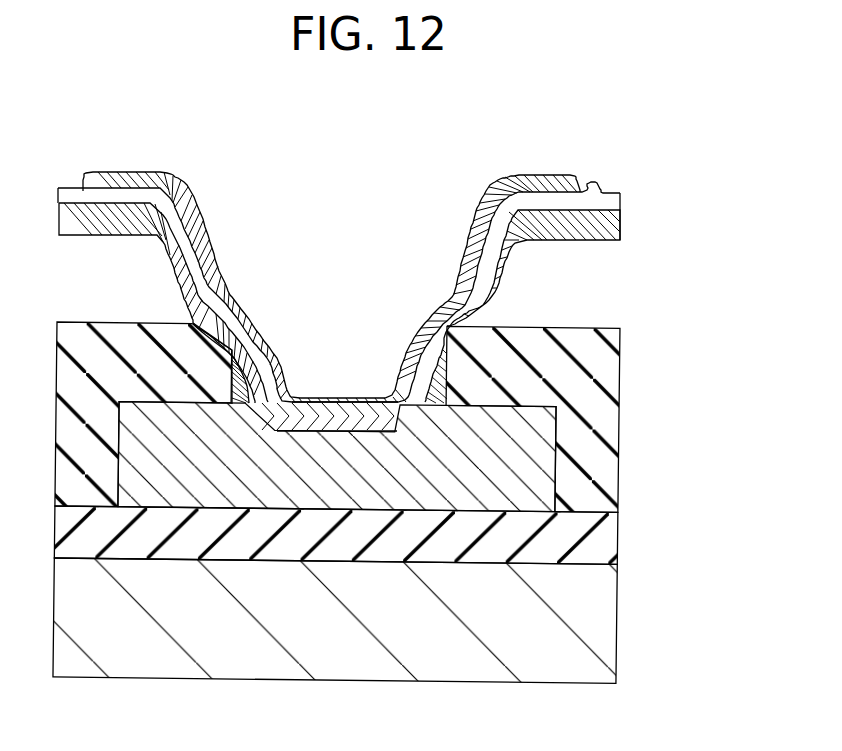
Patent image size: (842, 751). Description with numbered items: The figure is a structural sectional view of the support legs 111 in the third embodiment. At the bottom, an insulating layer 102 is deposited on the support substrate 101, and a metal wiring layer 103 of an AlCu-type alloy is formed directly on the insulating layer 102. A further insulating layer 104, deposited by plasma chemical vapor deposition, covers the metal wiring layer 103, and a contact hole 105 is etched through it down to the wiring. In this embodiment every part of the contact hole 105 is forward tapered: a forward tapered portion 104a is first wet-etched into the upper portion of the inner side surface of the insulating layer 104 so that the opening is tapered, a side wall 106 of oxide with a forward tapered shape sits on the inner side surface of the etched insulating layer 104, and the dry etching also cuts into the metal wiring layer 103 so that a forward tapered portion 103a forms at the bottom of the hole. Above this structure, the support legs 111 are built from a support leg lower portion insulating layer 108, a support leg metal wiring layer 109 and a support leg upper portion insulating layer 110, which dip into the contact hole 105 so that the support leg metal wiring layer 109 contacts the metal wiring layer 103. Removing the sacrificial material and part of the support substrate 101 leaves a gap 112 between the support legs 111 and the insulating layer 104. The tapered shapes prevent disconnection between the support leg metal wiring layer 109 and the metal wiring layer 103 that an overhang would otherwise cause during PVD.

The support substrate 101 is at (620, 623).
The insulating layer 102 is at (600, 534).
The metal wiring layer 103 is at (556, 483).
The forward tapered portion 103a is at (288, 391).
The insulating layer 104 is at (620, 418).
The forward tapered portion 104a is at (226, 322).
The contact hole 105 is at (337, 286).
The side wall 106 is at (266, 392).
The support leg lower portion insulating layer 108 is at (620, 226).
The support leg metal wiring layer 109 is at (578, 191).
The support leg upper portion insulating layer 110 is at (553, 176).
The support legs 111 is at (698, 123).
The gap 112 is at (598, 286).